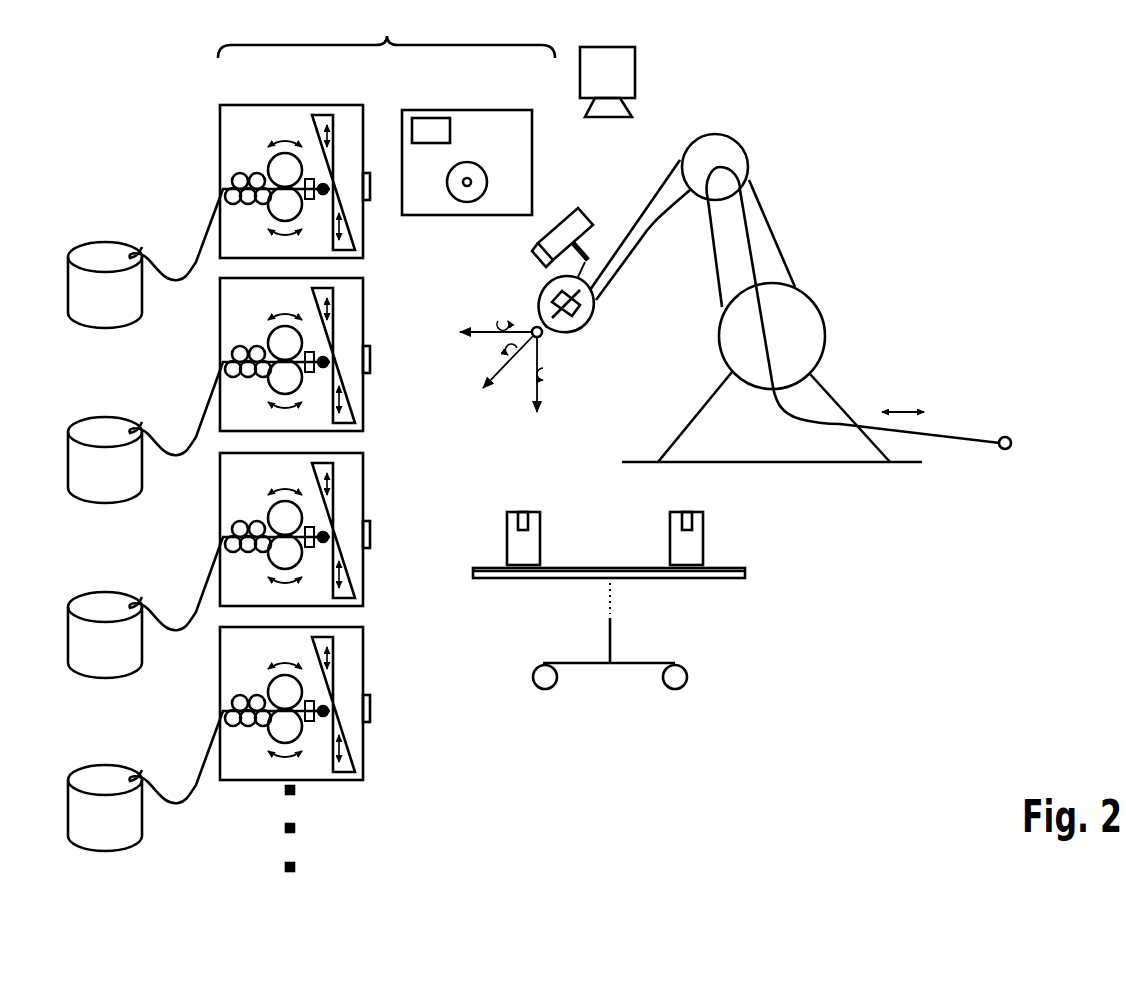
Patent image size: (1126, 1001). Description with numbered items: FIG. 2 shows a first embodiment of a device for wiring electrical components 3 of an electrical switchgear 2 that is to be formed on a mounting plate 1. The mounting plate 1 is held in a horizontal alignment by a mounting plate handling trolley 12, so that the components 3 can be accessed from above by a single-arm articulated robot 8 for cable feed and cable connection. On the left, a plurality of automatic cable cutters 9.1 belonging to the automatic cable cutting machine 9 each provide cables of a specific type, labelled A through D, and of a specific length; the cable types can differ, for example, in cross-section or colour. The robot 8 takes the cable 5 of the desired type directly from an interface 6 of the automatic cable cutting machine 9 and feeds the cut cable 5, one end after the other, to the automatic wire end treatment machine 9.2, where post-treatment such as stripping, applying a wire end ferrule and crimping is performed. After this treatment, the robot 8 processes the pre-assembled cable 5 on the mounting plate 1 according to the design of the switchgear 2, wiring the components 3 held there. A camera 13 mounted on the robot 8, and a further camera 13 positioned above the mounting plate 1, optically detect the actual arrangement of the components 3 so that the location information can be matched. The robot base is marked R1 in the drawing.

The mounting plate 1 is at (746, 573).
The electrical switchgear 2 is at (639, 571).
The electrical components 3 is at (523, 544).
The cable 5 is at (142, 247).
The interface 6 is at (370, 182).
The single-arm articulated robot 8 is at (691, 269).
The automatic cable cutting machine 9 is at (386, 29).
The automatic cable cutters 9.1 is at (286, 124).
The automatic wire end treatment machine 9.2 is at (483, 120).
The mounting plate handling trolley 12 is at (643, 662).
The camera 13 is at (615, 73).
The robot base R1 is at (772, 440).